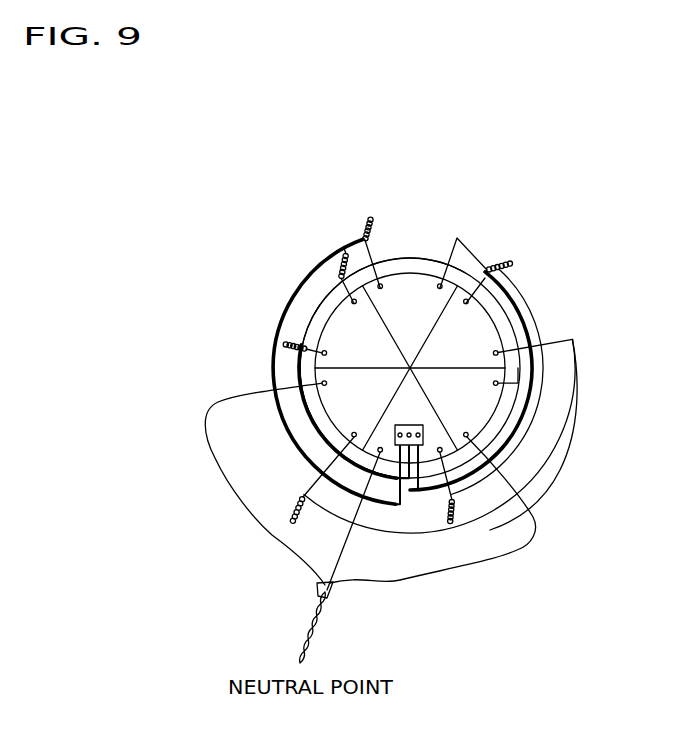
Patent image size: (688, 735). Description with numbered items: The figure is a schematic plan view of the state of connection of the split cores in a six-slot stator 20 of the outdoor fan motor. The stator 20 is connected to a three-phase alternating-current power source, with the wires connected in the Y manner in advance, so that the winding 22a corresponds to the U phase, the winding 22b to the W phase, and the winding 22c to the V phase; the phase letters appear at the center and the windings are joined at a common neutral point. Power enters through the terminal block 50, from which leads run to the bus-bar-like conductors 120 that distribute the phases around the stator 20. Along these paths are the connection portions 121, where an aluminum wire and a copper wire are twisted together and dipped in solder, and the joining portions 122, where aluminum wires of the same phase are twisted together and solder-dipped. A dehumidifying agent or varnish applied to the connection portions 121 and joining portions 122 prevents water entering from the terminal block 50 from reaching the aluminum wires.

The stator 20 is at (252, 211).
The bus bar 120 is at (322, 263).
The connection portion 121 is at (371, 218).
The joining portion 122 is at (343, 250).
The winding 22a is at (368, 262).
The winding 22b is at (482, 264).
The winding 22c is at (302, 346).
The terminal block 50 is at (423, 430).